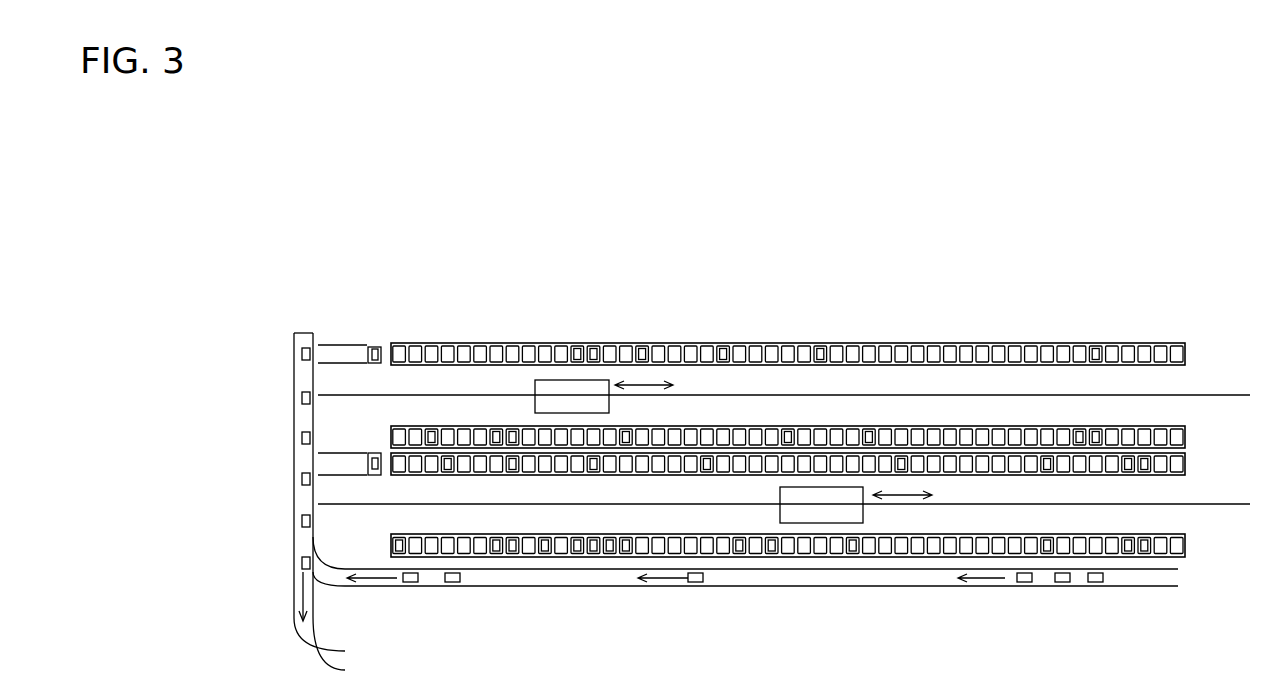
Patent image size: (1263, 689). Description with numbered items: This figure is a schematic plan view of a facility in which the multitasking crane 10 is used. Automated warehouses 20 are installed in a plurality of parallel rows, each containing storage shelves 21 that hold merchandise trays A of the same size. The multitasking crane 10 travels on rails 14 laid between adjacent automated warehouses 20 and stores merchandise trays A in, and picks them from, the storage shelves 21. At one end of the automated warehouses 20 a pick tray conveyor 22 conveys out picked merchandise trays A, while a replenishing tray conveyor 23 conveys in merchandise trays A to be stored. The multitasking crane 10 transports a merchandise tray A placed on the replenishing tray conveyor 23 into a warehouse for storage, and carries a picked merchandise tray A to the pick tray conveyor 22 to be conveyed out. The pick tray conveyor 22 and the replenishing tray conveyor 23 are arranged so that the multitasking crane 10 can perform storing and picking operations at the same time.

The multitasking crane 10 is at (535, 383).
The rails 14 is at (898, 395).
The automated warehouses 20 is at (440, 338).
The storage shelves 21 is at (397, 358).
The pick tray conveyor 22 is at (333, 352).
The replenishing tray conveyor 23 is at (366, 347).
The merchandise trays A is at (574, 347).